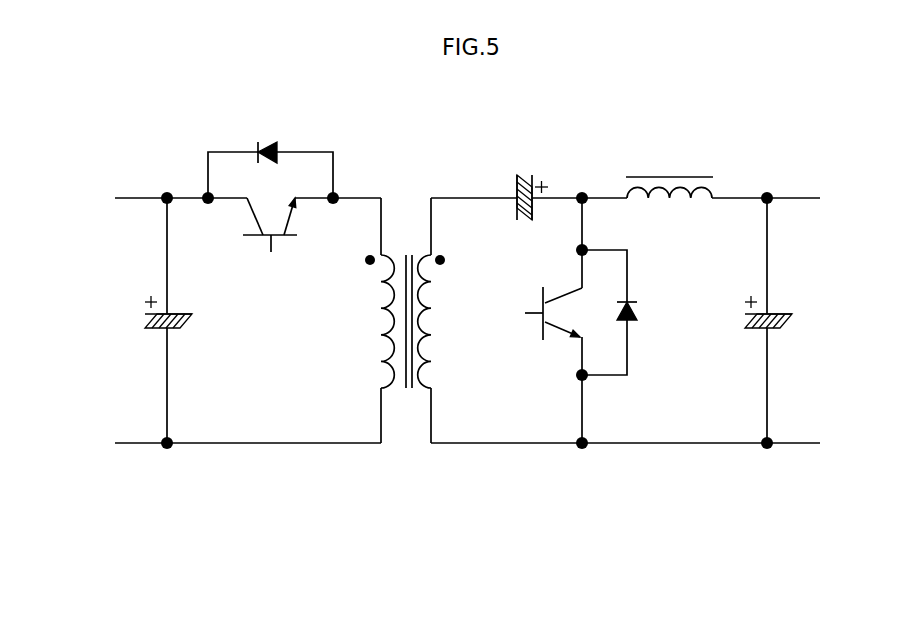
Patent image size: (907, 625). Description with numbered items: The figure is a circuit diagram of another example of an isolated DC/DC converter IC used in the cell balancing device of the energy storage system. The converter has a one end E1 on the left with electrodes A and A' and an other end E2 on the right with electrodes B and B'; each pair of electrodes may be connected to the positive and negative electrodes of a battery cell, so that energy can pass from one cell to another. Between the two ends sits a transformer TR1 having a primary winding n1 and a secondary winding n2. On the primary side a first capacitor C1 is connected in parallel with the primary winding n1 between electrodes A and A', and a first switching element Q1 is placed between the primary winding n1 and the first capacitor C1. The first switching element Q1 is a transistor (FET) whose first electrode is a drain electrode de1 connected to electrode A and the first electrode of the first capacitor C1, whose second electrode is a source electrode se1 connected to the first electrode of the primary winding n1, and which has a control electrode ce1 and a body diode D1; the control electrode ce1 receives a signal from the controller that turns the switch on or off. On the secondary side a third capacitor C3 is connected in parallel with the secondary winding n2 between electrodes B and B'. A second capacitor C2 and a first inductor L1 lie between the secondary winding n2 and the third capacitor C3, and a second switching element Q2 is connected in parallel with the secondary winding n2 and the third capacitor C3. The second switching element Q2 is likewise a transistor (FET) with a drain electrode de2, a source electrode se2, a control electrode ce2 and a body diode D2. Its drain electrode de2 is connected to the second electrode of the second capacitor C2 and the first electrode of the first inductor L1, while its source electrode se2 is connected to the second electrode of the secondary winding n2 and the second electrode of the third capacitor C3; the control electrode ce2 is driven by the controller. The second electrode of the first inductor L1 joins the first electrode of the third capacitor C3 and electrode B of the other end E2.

The first electrode of the one end A is at (127, 199).
The electrode of the one end A' is at (124, 442).
The first electrode of the other end B is at (808, 199).
The electrode of the other end B' is at (808, 444).
The one end E1 is at (74, 265).
The other end E2 is at (863, 266).
The first capacitor C1 is at (173, 320).
The body diode D1 is at (270, 153).
The first switching element Q1 is at (271, 238).
The drain electrode de1 is at (254, 222).
The source electrode se1 is at (299, 224).
The control electrode ce1 is at (270, 257).
The transformer TR1 is at (397, 301).
The primary winding n1 is at (362, 320).
The secondary winding n2 is at (441, 320).
The second capacitor C2 is at (517, 189).
The second switching element Q2 is at (533, 320).
The drain electrode of second transistor de2 is at (563, 293).
The source electrode of second transistor se2 is at (563, 333).
The control electrode of second transistor ce2 is at (514, 313).
The body diode D2 is at (628, 312).
The first inductor L1 is at (669, 172).
The third capacitor C3 is at (774, 320).
The isolated DC/DC converter IC is at (828, 172).